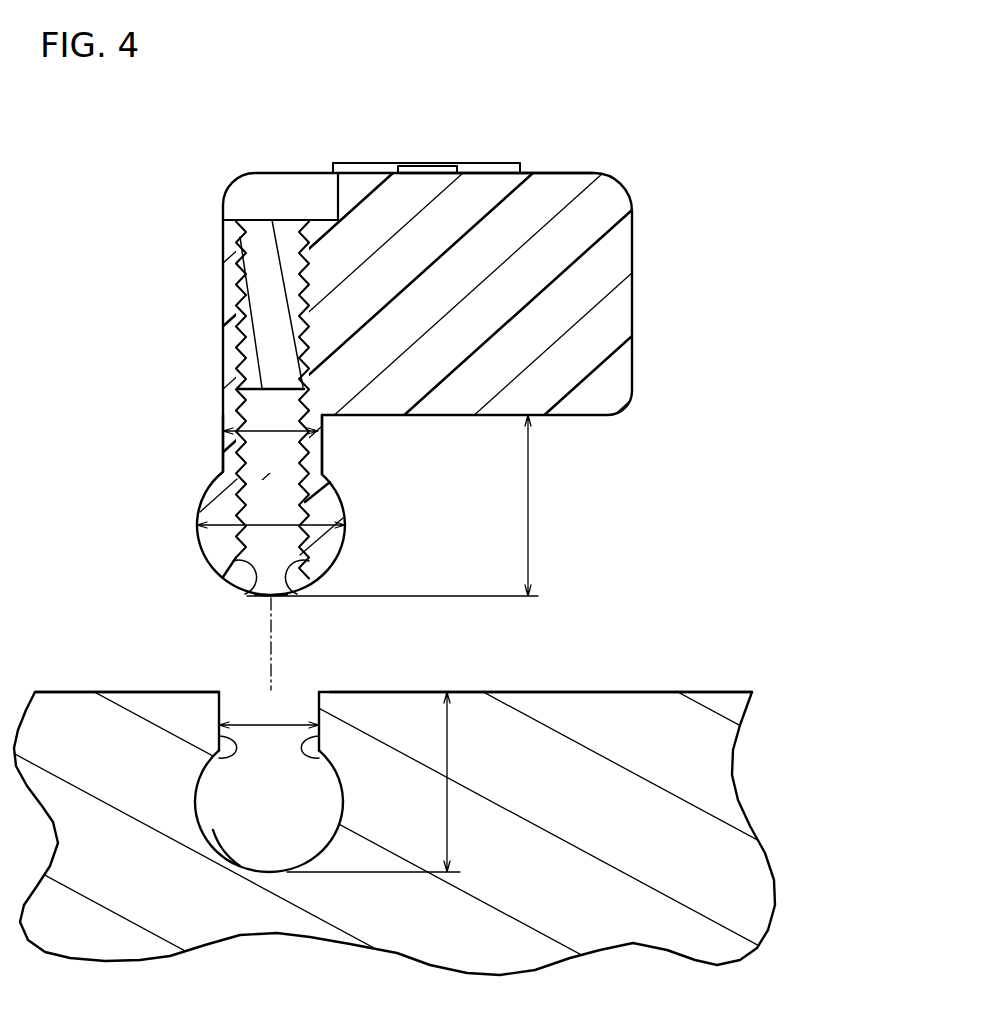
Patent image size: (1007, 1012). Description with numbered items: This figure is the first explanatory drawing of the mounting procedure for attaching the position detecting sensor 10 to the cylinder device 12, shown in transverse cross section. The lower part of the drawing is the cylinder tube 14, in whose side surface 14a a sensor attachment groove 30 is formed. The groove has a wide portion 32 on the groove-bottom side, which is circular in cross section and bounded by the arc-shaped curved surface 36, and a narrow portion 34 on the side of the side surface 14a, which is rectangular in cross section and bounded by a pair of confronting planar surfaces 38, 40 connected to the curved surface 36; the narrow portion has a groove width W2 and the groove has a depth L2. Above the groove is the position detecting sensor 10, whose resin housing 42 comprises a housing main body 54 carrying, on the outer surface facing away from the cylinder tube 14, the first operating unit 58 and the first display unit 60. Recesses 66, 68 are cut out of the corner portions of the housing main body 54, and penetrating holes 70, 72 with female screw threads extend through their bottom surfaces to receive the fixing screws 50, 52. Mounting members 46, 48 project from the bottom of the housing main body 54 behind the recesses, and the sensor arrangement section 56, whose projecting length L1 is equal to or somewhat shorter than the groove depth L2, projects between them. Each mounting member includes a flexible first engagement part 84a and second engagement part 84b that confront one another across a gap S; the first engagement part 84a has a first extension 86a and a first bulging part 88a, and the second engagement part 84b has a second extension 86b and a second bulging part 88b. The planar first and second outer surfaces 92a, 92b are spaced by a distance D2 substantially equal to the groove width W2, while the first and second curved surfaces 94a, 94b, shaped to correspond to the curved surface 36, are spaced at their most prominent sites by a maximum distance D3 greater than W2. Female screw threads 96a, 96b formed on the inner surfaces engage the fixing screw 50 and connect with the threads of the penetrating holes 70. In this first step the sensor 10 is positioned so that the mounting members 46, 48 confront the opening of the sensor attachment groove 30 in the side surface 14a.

The position detecting sensor 10 is at (441, 389).
The cylinder device 12 is at (713, 675).
The cylinder tube 14 is at (598, 706).
The side surface 14a is at (118, 692).
The sensor attachment groove 30 is at (266, 795).
The wide portion 32 is at (300, 840).
The narrow portion 34 is at (298, 692).
The curved surface 36 is at (240, 841).
The planar surface 38 is at (217, 764).
The planar surface 40 is at (325, 764).
The housing 42 is at (536, 151).
The mounting member 46 is at (188, 533).
The mounting member 48 is at (179, 536).
The fixing screw 50 is at (210, 304).
The fixing screw 52 is at (267, 303).
The housing main body 54 is at (482, 190).
The sensor arrangement section 56 is at (258, 585).
The first operating unit 58 is at (362, 168).
The first display unit 60 is at (424, 168).
The recess 66 is at (280, 165).
The recess 68 is at (267, 183).
The penetrating hole 70 is at (214, 316).
The penetrating hole 72 is at (240, 262).
The first engagement part 84a is at (149, 494).
The second engagement part 84b is at (393, 495).
The first extension 86a is at (228, 458).
The second extension 86b is at (313, 457).
The first bulging part 88a is at (214, 506).
The second bulging part 88b is at (327, 507).
The first outer surface 92a is at (222, 420).
The second outer surface 92b is at (323, 442).
The first curved surface 94a is at (205, 557).
The second curved surface 94b is at (338, 557).
The female screw threads 96a is at (250, 592).
The female screw threads 96b is at (291, 592).
The gap S is at (278, 587).
The distance D2 is at (270, 419).
The maximum distance D3 is at (271, 514).
The groove width W2 is at (269, 712).
The projecting length L1 is at (403, 505).
The groove depth L2 is at (382, 782).